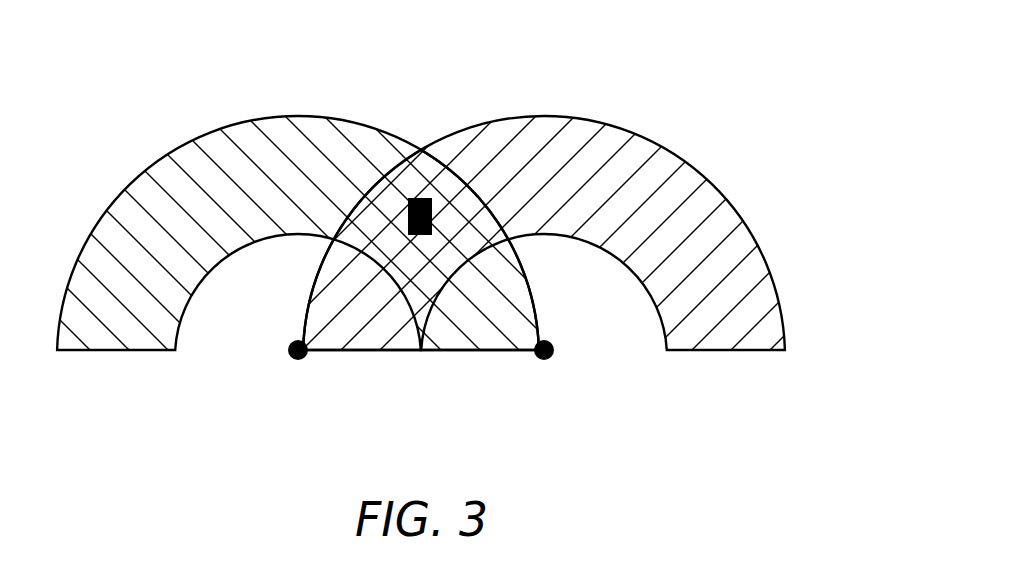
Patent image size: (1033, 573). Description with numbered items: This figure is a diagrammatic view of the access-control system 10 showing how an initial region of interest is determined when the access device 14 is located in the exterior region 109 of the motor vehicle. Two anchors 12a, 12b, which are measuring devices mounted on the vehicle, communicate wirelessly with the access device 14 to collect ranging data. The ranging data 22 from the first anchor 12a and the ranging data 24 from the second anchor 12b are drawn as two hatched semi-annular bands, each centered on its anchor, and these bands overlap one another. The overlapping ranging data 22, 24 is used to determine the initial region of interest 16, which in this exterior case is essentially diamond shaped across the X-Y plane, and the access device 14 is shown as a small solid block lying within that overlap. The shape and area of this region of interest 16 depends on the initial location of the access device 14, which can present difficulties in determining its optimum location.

The access-control system 10 is at (508, 236).
The exterior region 109 is at (117, 129).
The ranging data 22 is at (245, 127).
The ranging data 24 is at (630, 158).
The initial region of interest 16 is at (400, 172).
The access device 14 is at (420, 188).
The anchor 12a is at (299, 374).
The anchor 12b is at (544, 374).